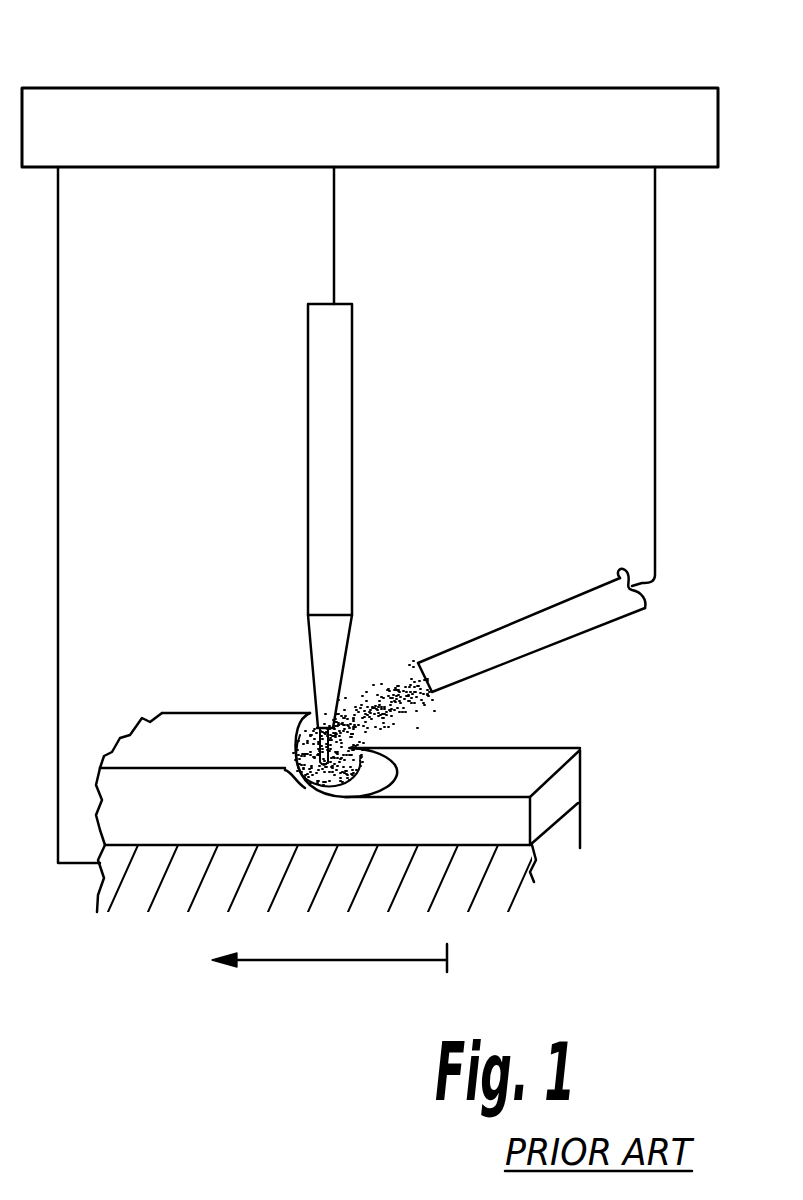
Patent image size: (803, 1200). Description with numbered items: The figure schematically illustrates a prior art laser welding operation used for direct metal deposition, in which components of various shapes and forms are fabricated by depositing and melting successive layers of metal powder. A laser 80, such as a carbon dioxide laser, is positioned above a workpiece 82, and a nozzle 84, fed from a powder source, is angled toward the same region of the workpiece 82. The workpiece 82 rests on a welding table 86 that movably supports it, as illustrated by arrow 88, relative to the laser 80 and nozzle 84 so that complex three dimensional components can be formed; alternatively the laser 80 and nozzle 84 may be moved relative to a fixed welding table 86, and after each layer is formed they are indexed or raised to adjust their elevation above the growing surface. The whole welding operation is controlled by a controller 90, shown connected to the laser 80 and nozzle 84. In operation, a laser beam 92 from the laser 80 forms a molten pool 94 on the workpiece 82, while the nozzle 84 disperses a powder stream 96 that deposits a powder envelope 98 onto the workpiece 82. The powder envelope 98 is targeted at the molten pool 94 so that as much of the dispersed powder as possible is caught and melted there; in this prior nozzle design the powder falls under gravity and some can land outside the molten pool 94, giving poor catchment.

The laser 80 is at (379, 534).
The workpiece 82 is at (358, 747).
The nozzle 84 is at (538, 610).
The welding table 86 is at (553, 852).
The arrow 88 is at (325, 960).
The controller 90 is at (630, 80).
The laser beam 92 is at (330, 648).
The molten pool 94 is at (295, 772).
The powder stream 96 is at (393, 705).
The powder envelope 98 is at (362, 766).